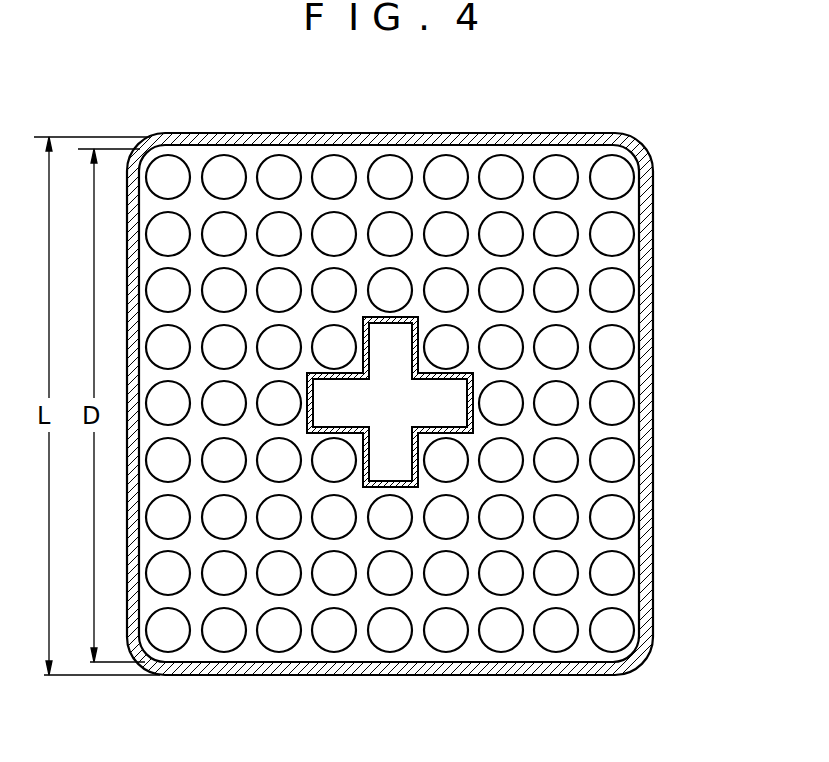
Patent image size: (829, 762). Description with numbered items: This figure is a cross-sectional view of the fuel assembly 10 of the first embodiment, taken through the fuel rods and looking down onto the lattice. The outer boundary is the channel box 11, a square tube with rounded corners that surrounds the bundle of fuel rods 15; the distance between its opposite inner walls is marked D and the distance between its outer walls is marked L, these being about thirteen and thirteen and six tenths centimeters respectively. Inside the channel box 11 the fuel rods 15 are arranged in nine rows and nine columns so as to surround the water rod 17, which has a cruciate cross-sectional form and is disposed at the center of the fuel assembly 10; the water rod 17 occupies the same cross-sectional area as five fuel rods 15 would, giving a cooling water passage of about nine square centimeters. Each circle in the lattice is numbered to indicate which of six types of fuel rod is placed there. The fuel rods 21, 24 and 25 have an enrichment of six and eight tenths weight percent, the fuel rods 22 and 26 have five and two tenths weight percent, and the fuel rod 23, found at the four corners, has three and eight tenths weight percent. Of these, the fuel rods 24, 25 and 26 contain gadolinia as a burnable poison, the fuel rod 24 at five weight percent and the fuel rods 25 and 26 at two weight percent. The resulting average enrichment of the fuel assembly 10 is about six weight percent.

The fuel assembly 10 is at (654, 333).
The channel box 11 is at (587, 676).
The fuel rods 15 is at (493, 650).
The water rod 17 is at (367, 488).
The fuel rod 21 is at (390, 403).
The fuel rod 22 is at (390, 403).
The fuel rod 23 is at (390, 403).
The fuel rod 24 is at (390, 403).
The fuel rod 25 is at (390, 403).
The fuel rod 26 is at (390, 403).